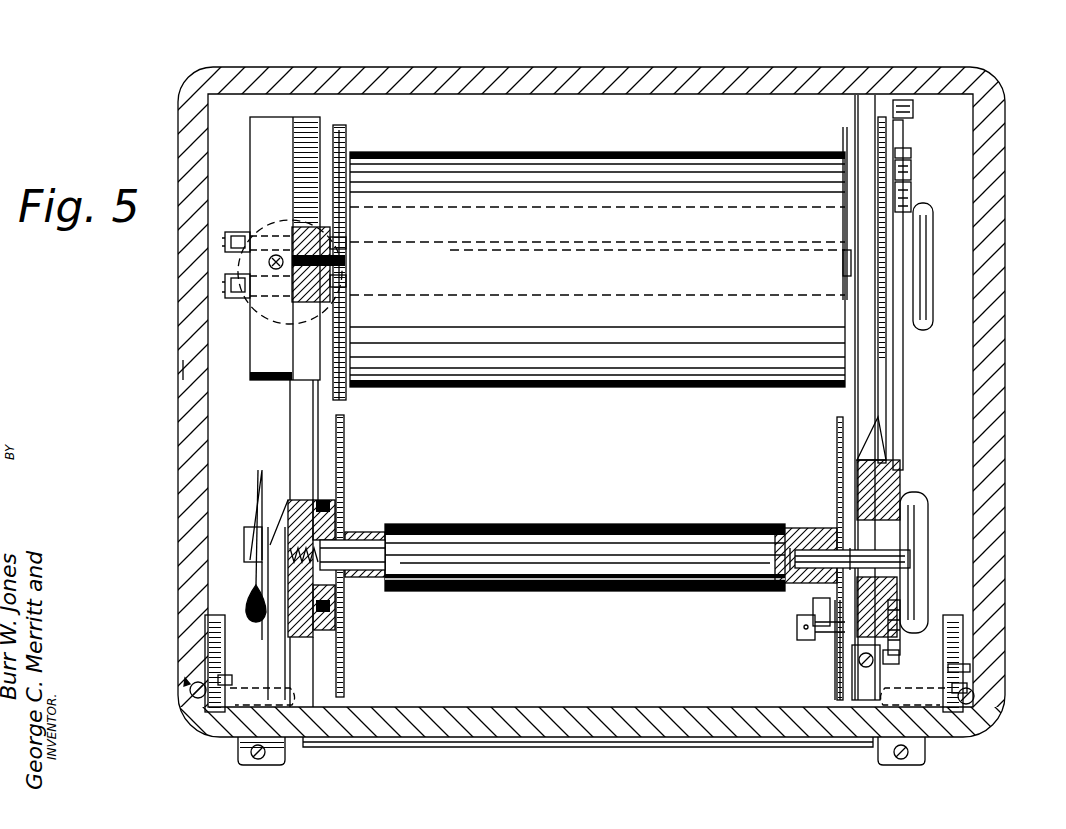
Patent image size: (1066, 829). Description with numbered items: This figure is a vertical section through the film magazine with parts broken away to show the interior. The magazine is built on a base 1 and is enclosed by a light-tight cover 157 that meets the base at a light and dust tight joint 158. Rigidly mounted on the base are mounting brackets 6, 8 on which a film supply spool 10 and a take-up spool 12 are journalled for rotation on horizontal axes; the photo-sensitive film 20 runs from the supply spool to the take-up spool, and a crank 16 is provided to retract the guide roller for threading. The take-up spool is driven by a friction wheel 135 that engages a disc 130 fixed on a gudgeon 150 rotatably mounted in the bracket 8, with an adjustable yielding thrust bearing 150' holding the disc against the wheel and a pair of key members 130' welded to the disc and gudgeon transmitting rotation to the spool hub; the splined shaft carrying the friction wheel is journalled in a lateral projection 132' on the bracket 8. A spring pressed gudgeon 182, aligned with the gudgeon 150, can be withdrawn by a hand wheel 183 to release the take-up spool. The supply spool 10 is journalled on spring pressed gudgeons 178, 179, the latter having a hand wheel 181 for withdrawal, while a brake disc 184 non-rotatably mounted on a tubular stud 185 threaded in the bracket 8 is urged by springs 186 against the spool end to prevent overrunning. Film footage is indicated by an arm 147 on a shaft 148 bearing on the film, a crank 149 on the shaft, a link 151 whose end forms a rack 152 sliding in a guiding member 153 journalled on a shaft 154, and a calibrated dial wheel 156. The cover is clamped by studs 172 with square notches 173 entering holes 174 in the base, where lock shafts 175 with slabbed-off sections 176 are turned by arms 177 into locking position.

The base 1 is at (738, 712).
The mounting bracket 6 is at (880, 390).
The mounting bracket 8 is at (302, 632).
The film supply spool 10 is at (345, 448).
The take-up spool 12 is at (347, 132).
The crank 16 is at (256, 590).
The photo-sensitive film 20 is at (630, 160).
The disc 130 is at (335, 212).
The key members 130' is at (378, 255).
The lateral projection 132' is at (268, 265).
The friction wheel 135 is at (226, 290).
The arm 147 is at (815, 612).
The shaft 148 is at (822, 636).
The crank 149 is at (900, 648).
The gudgeon 150 is at (355, 263).
The thrust bearing 150' is at (290, 251).
The link 151 is at (904, 418).
The rack 152 is at (912, 190).
The guiding and supporting member 153 is at (912, 150).
The shaft 154 is at (912, 166).
The dial wheel 156 is at (914, 109).
The cover 157 is at (182, 374).
The joint 158 is at (186, 680).
The studs 172 is at (205, 620).
The notches 173 is at (226, 684).
The holes 174 is at (210, 733).
The lock shafts 175 is at (190, 692).
The slabbed-off sections 176 is at (970, 672).
The arms 177 is at (888, 672).
The gudgeon 178 is at (356, 525).
The gudgeon 179 is at (830, 530).
The hand wheel 181 is at (914, 492).
The gudgeon 182 is at (840, 268).
The hand wheel 183 is at (922, 205).
The disc 184 is at (344, 484).
The tubular stud 185 is at (344, 590).
The springs 186 is at (318, 494).